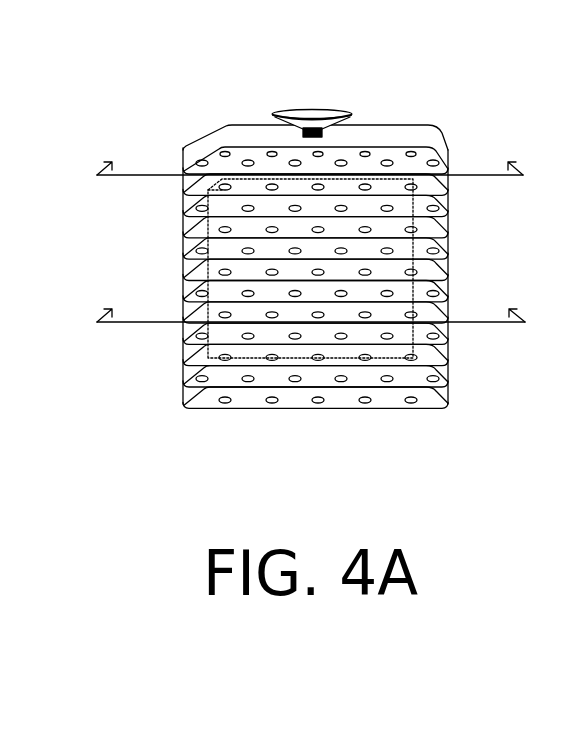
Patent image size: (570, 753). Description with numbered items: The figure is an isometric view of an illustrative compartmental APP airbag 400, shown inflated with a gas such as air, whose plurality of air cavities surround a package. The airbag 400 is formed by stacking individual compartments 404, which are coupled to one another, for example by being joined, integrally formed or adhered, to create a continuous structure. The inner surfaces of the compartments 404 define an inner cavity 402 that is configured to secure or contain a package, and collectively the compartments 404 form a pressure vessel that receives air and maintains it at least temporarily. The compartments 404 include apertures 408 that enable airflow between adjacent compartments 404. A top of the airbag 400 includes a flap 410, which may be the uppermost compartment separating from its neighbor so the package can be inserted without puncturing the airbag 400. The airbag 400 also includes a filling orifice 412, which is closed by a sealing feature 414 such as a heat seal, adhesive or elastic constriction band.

The compartmental APP airbag 400 is at (453, 80).
The inner cavity 402 is at (412, 252).
The compartments 404 is at (167, 238).
The apertures 408 is at (412, 401).
The flap 410 is at (448, 158).
The filling orifice 412 is at (340, 112).
The sealing feature 414 is at (303, 131).